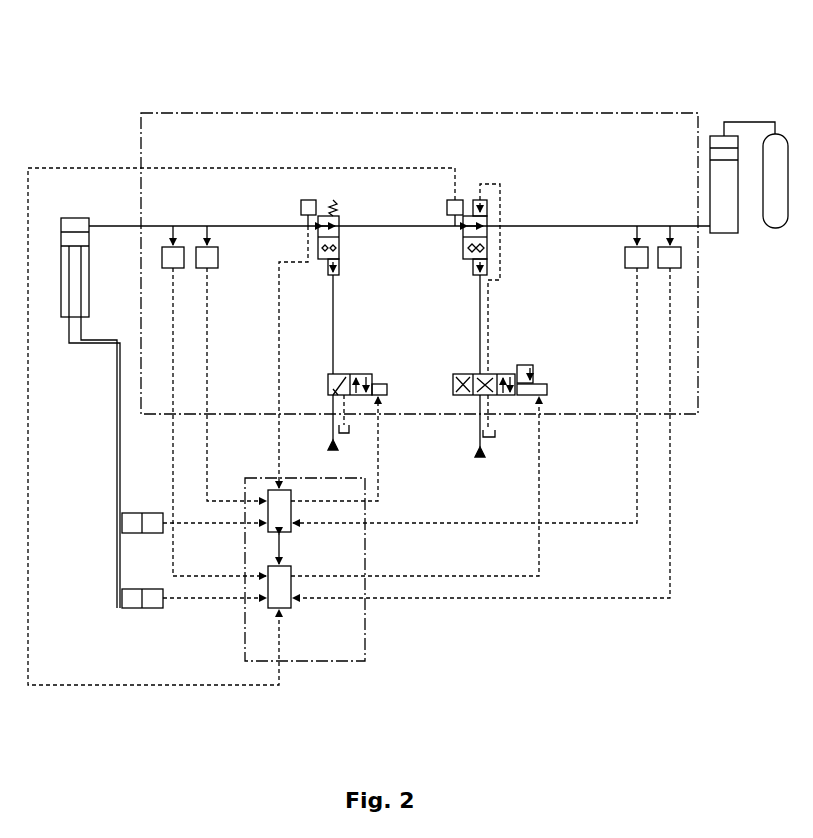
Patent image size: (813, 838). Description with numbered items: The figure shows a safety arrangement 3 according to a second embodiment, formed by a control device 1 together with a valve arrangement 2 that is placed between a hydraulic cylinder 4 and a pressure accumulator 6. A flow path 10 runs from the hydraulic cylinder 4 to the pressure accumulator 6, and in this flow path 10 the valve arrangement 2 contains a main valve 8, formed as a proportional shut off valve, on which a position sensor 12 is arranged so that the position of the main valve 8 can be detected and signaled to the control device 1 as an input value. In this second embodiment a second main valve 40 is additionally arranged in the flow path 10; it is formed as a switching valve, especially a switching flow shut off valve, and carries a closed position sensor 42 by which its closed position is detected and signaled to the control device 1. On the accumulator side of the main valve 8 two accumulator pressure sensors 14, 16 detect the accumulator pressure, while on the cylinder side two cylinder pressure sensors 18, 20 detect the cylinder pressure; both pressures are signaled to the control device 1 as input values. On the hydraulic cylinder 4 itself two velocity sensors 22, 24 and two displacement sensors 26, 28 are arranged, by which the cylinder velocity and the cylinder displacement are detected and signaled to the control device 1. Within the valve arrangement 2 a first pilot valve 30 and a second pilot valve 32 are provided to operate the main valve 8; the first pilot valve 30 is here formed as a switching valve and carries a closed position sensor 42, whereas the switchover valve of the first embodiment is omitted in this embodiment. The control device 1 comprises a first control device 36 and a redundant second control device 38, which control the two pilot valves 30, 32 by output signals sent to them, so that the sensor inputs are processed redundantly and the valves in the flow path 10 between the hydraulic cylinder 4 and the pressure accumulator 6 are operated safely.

The control device 1 is at (369, 631).
The valve arrangement 2 is at (354, 108).
The safety arrangement 3 is at (515, 635).
The hydraulic cylinder 4 is at (61, 297).
The pressure accumulator 6 is at (716, 110).
The main valve 8 is at (472, 264).
The flow path 10 is at (366, 226).
The position sensor 12 is at (447, 200).
The accumulator pressure sensor 14 is at (645, 268).
The accumulator pressure sensor 16 is at (678, 268).
The cylinder pressure sensor 18 is at (163, 268).
The cylinder pressure sensor 20 is at (197, 268).
The velocity sensor 22 is at (135, 513).
The velocity sensor 24 is at (134, 589).
The displacement sensor 26 is at (150, 533).
The displacement sensor 28 is at (153, 608).
The first pilot valve 30 is at (328, 376).
The second pilot valve 32 is at (453, 376).
The first control device 36 is at (289, 532).
The second control device 38 is at (289, 608).
The second main valve 40 is at (339, 246).
The closed position sensor 42 is at (301, 200).